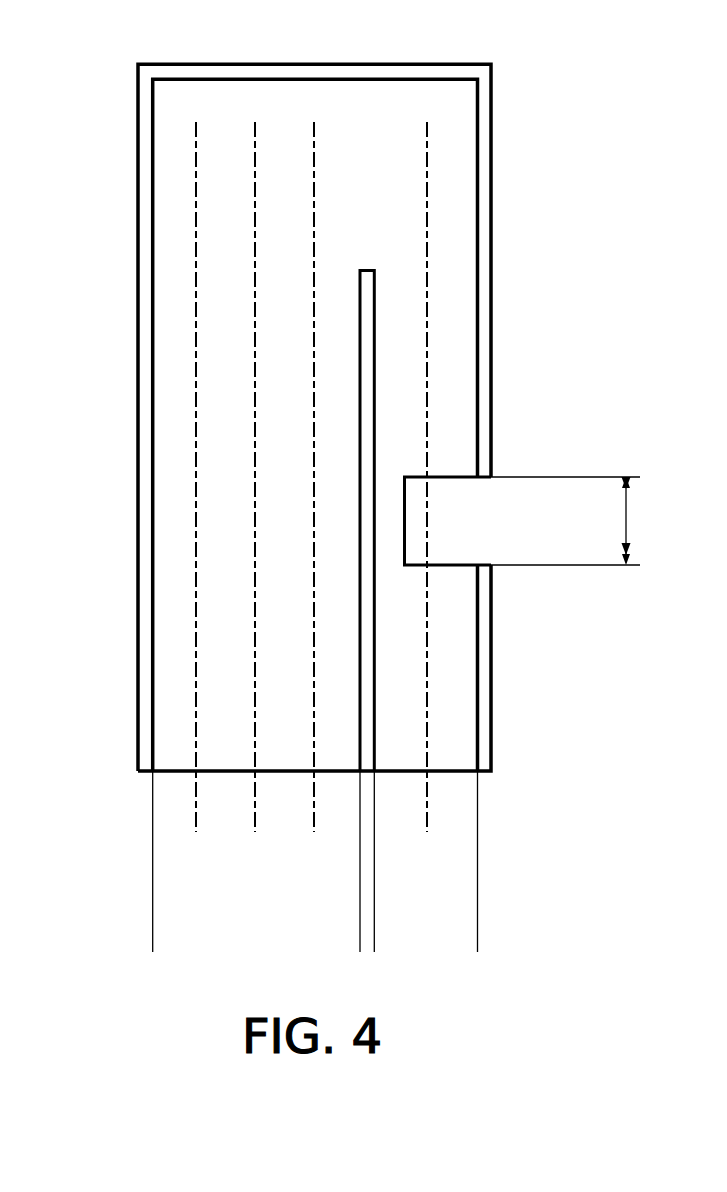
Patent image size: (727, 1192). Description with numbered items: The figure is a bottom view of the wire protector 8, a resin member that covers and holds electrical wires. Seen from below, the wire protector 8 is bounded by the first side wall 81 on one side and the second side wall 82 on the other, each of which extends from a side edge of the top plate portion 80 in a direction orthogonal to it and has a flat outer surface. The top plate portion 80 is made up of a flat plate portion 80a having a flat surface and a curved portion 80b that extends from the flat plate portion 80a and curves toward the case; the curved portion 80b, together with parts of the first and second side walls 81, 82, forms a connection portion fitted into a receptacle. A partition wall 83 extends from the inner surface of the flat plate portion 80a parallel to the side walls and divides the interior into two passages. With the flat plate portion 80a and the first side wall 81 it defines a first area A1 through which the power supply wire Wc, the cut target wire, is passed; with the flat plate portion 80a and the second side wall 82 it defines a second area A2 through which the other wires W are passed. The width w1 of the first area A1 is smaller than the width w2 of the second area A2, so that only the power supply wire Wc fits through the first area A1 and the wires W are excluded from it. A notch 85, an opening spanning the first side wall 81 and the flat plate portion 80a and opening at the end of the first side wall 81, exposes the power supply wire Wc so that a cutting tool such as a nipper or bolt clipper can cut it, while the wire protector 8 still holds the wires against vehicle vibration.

The wire protector 8 is at (347, 478).
The top plate portion 80 is at (418, 477).
The flat plate portion 80a is at (584, 153).
The curved portion 80b is at (450, 164).
The first side wall 81 is at (485, 635).
The second side wall 82 is at (147, 400).
The partition wall 83 is at (365, 630).
The notch 85 is at (452, 515).
The first area A1 is at (452, 397).
The second area A2 is at (183, 505).
The wire W is at (320, 833).
The power supply wire Wc is at (433, 860).
The width of the first area w1 is at (478, 935).
The width of the second area w2 is at (360, 935).